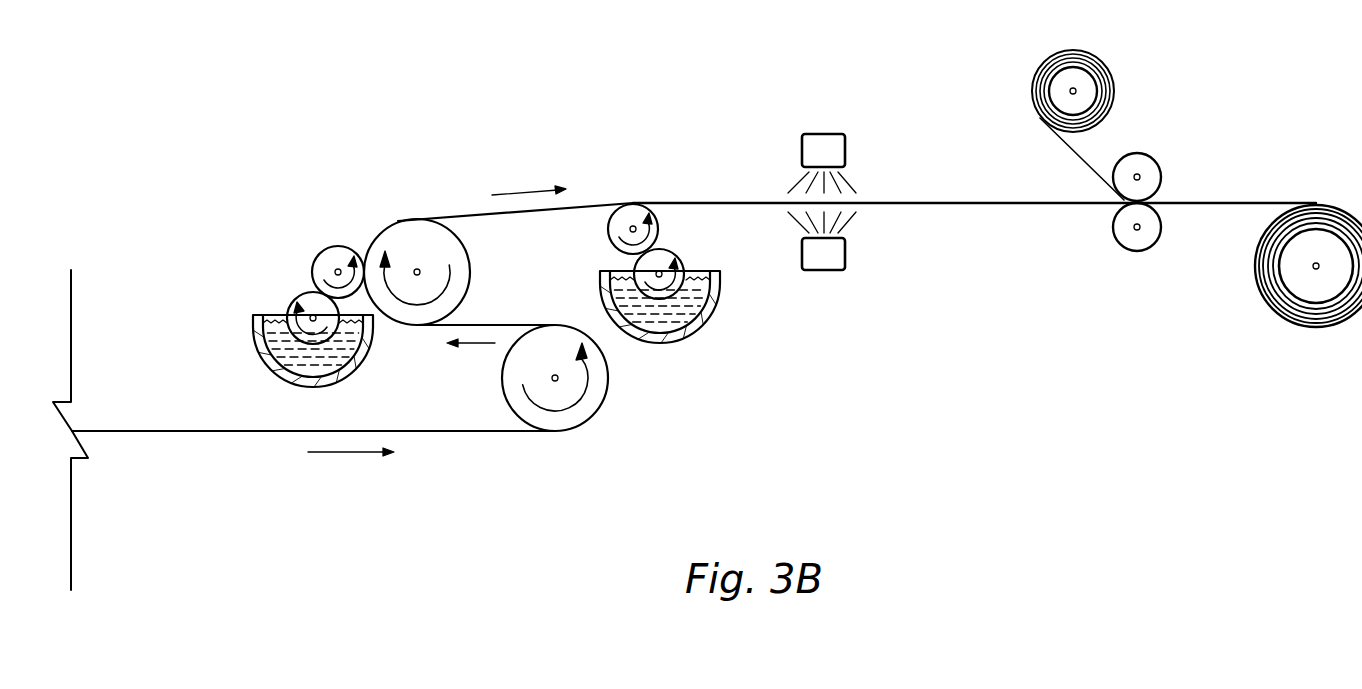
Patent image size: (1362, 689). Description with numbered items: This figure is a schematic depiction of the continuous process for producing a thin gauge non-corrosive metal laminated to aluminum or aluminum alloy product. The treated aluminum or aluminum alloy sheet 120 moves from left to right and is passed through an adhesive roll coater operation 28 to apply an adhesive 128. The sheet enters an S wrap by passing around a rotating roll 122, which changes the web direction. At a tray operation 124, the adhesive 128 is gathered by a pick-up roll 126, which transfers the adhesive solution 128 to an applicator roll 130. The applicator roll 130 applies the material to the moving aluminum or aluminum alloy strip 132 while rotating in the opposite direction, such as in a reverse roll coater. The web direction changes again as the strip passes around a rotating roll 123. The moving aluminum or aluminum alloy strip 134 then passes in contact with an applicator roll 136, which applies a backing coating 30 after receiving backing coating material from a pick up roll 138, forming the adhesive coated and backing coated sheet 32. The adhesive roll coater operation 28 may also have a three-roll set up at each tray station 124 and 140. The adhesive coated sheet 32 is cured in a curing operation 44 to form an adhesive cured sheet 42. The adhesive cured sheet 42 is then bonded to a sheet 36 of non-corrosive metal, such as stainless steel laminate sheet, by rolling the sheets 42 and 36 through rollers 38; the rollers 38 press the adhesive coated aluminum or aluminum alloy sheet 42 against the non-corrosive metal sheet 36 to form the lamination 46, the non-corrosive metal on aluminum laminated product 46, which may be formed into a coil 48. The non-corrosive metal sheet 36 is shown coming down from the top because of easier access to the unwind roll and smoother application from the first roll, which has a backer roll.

The adhesive roll coater operation 28 is at (423, 62).
The backing coating 30 is at (705, 322).
The adhesive coated and backing coated sheet 32 is at (712, 203).
The sheet of non-corrosive metal 36 is at (1075, 153).
The rollers 38 is at (1140, 152).
The adhesive cured sheet 42 is at (940, 203).
The curing operation 44 is at (838, 110).
The lamination 46 is at (1230, 202).
The coil 48 is at (1318, 328).
The treated aluminum or aluminum alloy sheet 120 is at (267, 432).
The rotating roll 122 is at (503, 382).
The rotating roll 123 is at (469, 265).
The tray operation 124 is at (248, 218).
The pick-up roll 126 is at (294, 300).
The adhesive 128 is at (272, 368).
The applicator roll 130 is at (330, 246).
The moving aluminum or aluminum alloy strip 132 is at (489, 324).
The moving aluminum or aluminum alloy strip 134 is at (473, 214).
The applicator roll 136 is at (659, 230).
The pick up roll 138 is at (685, 275).
The tray station 140 is at (721, 379).